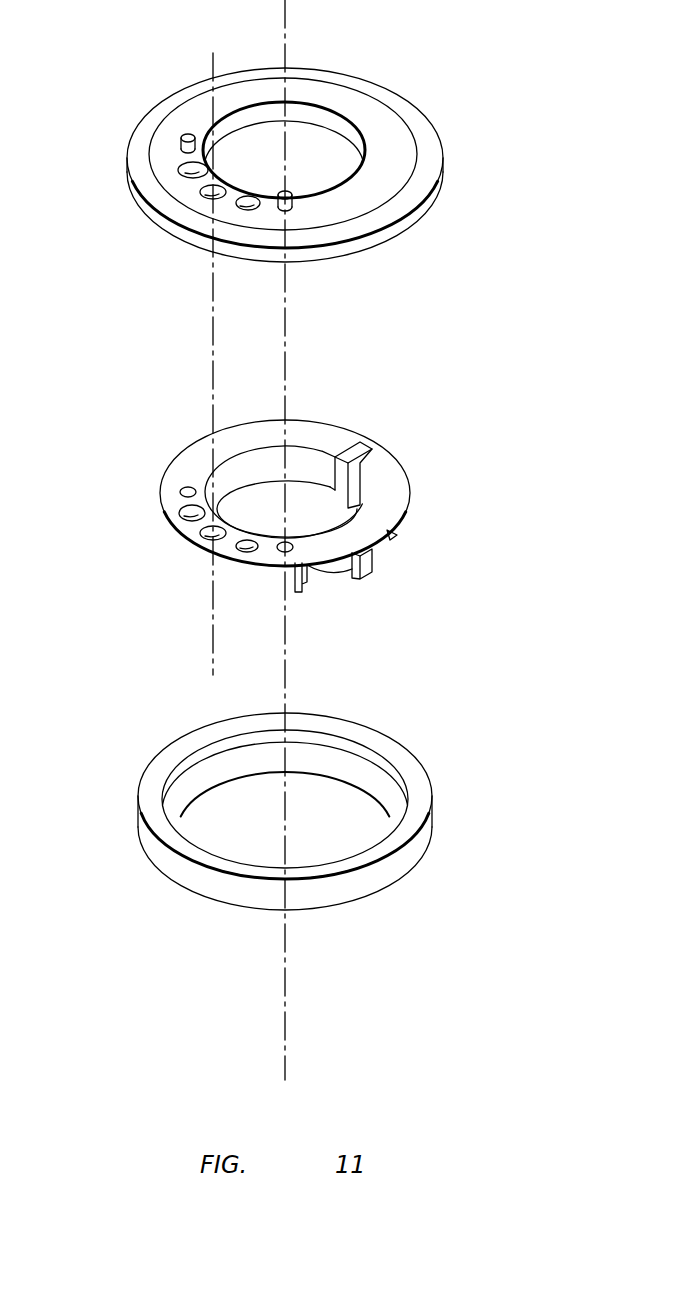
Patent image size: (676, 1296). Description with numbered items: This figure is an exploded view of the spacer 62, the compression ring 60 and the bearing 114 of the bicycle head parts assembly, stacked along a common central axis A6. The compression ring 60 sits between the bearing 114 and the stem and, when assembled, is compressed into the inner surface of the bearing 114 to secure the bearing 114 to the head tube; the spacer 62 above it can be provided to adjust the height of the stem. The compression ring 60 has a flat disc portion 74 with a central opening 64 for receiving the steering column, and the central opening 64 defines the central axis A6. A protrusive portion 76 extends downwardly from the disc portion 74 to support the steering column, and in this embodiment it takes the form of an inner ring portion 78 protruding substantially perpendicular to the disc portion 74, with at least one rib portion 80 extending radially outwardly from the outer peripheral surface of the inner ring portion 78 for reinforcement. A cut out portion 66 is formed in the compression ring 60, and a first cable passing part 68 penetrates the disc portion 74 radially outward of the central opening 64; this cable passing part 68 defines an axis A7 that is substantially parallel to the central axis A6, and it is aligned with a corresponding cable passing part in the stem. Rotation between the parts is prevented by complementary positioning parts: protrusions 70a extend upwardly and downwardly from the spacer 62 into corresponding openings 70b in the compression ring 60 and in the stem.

The spacer 62 is at (288, 297).
The protrusions 70a is at (188, 133).
The first cable passing part 68 is at (236, 204).
The compression ring 60 is at (323, 486).
The openings 70b is at (188, 487).
The inner ring portion 78 is at (238, 473).
The central opening 64 is at (302, 500).
The cut out portion 66 is at (375, 447).
The disc portion 74 is at (410, 493).
The protrusive portion 76 is at (372, 563).
The rib portion 80 is at (300, 588).
The bearing 114 is at (413, 787).
The axis of the first cable passing part A7 is at (213, 643).
The central axis A6 is at (285, 1003).